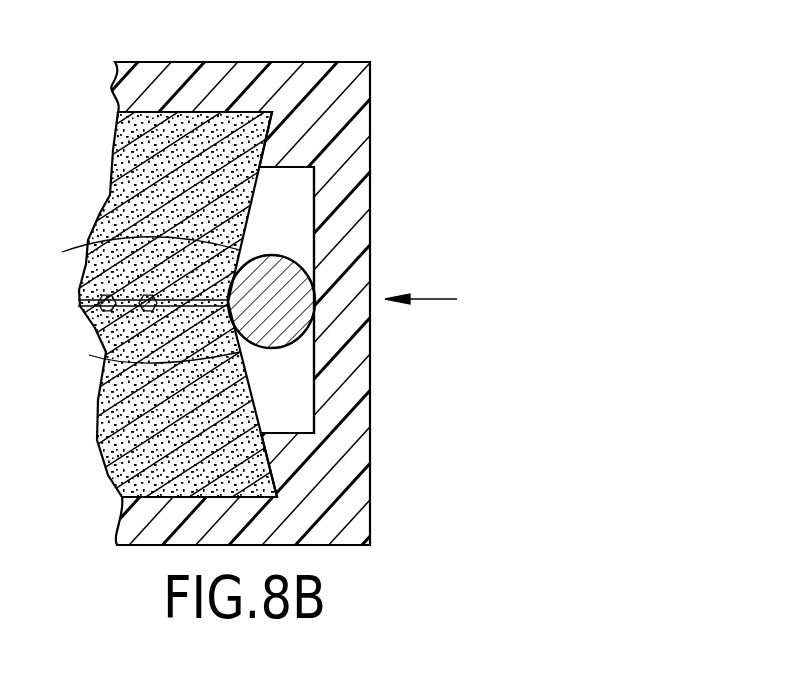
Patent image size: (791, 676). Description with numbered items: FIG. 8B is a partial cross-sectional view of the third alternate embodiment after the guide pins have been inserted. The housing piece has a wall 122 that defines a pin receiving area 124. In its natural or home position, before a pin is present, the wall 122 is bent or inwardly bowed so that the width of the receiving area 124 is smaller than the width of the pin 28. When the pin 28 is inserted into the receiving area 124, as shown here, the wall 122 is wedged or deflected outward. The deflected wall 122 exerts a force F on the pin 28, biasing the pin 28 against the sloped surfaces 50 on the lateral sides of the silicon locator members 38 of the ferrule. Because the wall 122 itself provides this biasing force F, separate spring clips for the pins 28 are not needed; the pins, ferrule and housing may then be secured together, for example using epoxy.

The wall 122 is at (372, 390).
The pin receiving area 124 is at (283, 212).
The pin 28 is at (297, 266).
The locator member 38 is at (113, 150).
The sloped surface 50 is at (135, 302).
The force F is at (433, 298).